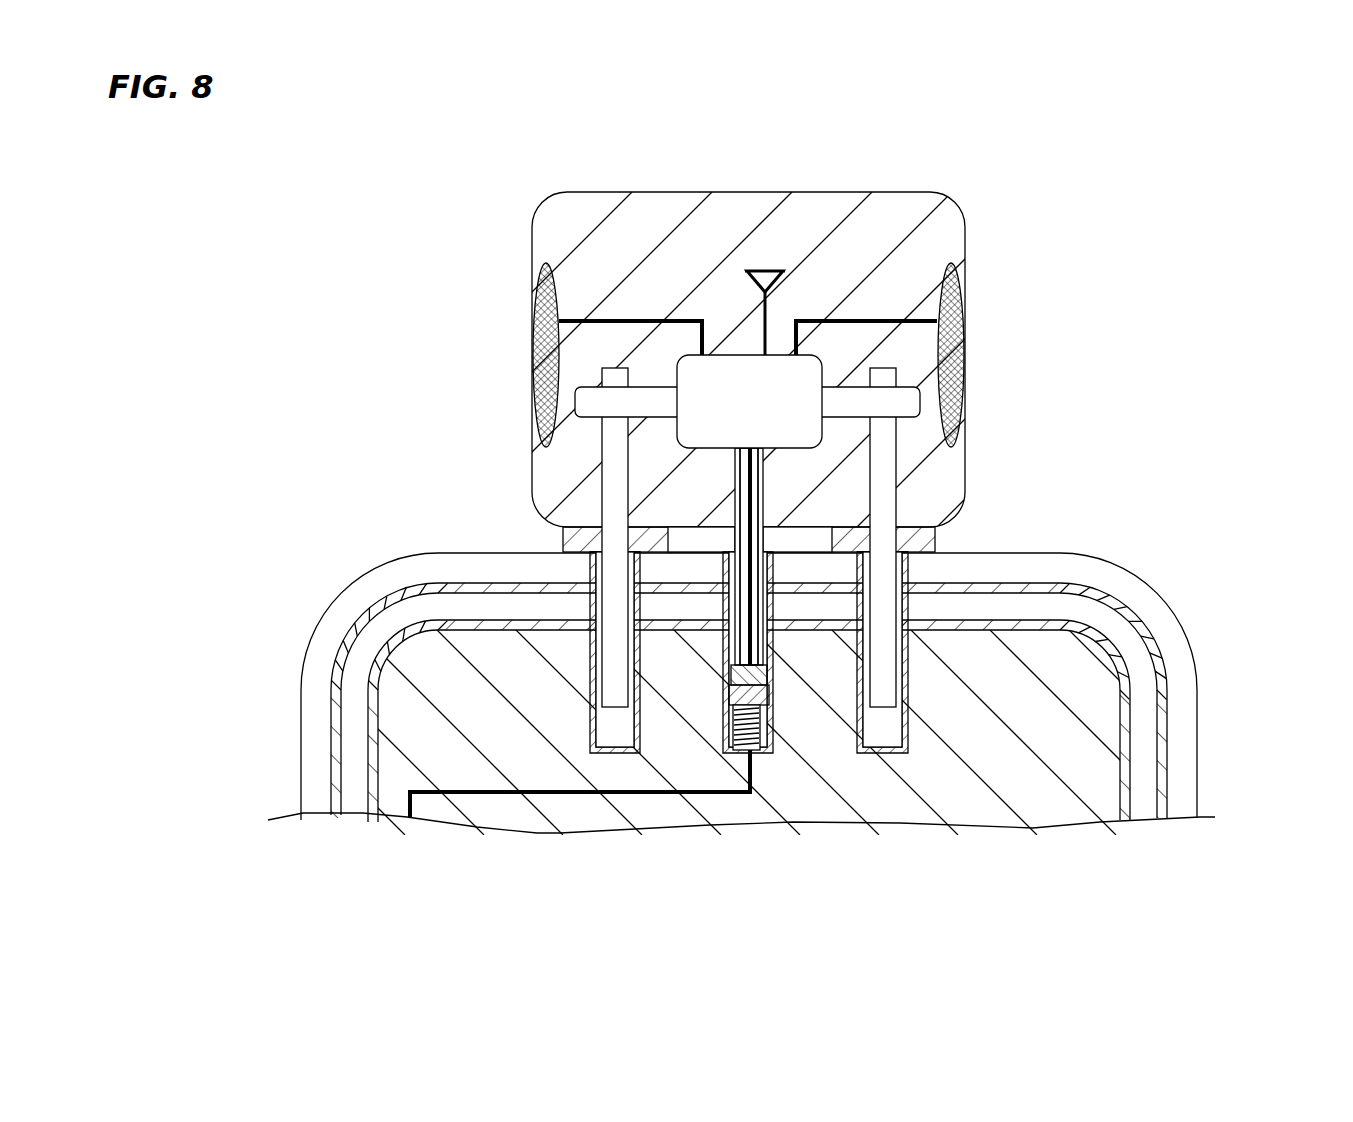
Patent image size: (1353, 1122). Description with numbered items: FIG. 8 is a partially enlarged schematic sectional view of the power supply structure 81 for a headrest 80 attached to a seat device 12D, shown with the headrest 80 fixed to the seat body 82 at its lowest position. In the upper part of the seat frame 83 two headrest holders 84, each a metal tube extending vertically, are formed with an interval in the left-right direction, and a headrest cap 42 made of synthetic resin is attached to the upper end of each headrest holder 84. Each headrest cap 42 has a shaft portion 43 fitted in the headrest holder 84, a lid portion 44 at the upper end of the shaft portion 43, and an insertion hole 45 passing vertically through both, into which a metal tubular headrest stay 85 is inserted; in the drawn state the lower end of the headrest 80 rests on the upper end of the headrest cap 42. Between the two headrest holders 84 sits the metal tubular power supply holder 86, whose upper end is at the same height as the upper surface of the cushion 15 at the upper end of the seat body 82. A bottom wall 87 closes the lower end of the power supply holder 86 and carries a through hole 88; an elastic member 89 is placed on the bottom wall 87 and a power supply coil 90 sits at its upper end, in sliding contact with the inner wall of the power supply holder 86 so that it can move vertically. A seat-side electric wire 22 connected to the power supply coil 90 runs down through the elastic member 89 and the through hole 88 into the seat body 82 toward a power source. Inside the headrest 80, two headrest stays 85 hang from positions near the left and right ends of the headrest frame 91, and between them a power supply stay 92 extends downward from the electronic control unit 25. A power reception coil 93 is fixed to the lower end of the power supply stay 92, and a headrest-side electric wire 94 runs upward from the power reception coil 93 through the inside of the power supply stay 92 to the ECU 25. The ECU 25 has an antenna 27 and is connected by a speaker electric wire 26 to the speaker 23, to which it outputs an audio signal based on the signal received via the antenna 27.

The seat device 12D is at (1240, 375).
The cushion 15 is at (1090, 570).
The seat-side electric wire 22 is at (446, 792).
The speaker 23 is at (533, 333).
The electronic control unit (ECU) 25 is at (822, 365).
The speaker electric wire 26 is at (598, 385).
The antenna 27 is at (773, 312).
The headrest cap 42 is at (346, 480).
The shaft portion 43 is at (590, 573).
The lid portion 44 is at (593, 527).
The insertion hole 45 is at (593, 605).
The headrest 80 is at (943, 217).
The power supply structure 81 is at (875, 843).
The seat body 82 is at (1205, 500).
The seat frame 83 is at (1095, 620).
The headrest holder 84 is at (590, 646).
The headrest stay 85 is at (602, 472).
The power supply holder 86 is at (723, 648).
The bottom wall 87 is at (728, 753).
The through hole 88 is at (758, 756).
The elastic member 89 is at (775, 740).
The power supply coil 90 is at (775, 700).
The headrest frame 91 is at (918, 389).
The power supply stay 92 is at (737, 480).
The power reception coil 93 is at (775, 675).
The headrest-side electric wire 94 is at (737, 503).